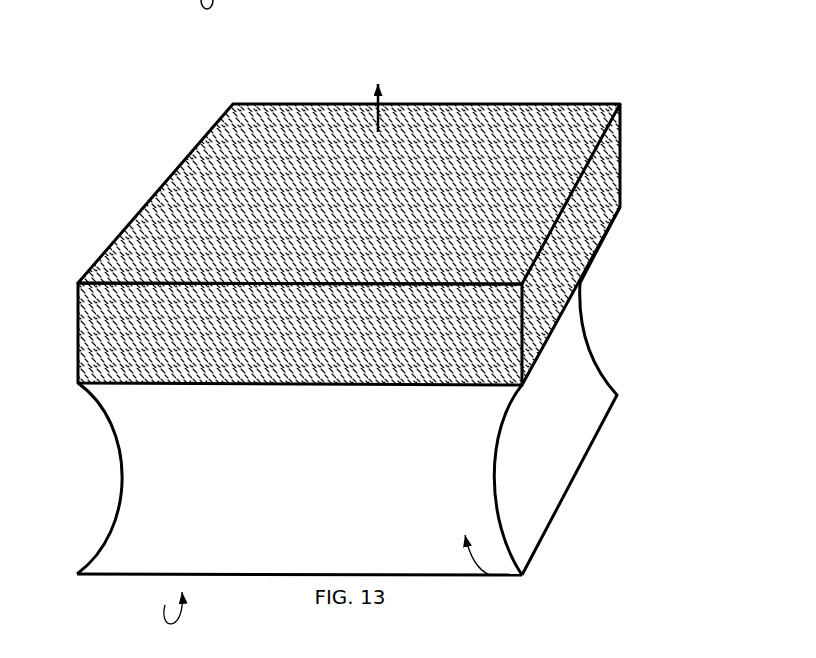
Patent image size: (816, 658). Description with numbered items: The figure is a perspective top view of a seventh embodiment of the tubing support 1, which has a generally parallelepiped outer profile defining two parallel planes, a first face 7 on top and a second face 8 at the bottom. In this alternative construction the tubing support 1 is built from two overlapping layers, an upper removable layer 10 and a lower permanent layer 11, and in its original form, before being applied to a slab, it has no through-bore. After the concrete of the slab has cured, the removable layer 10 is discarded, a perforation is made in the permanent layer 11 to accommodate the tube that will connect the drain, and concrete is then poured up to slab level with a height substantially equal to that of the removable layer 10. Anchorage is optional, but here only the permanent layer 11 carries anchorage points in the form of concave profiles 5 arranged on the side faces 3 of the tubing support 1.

The tubing support 1 is at (353, 314).
The side faces 3 is at (70, 403).
The concave profiles 5 is at (118, 463).
The first face 7 is at (225, 160).
The second face 8 is at (170, 606).
The removable layer 10 is at (595, 188).
The permanent layer 11 is at (612, 278).